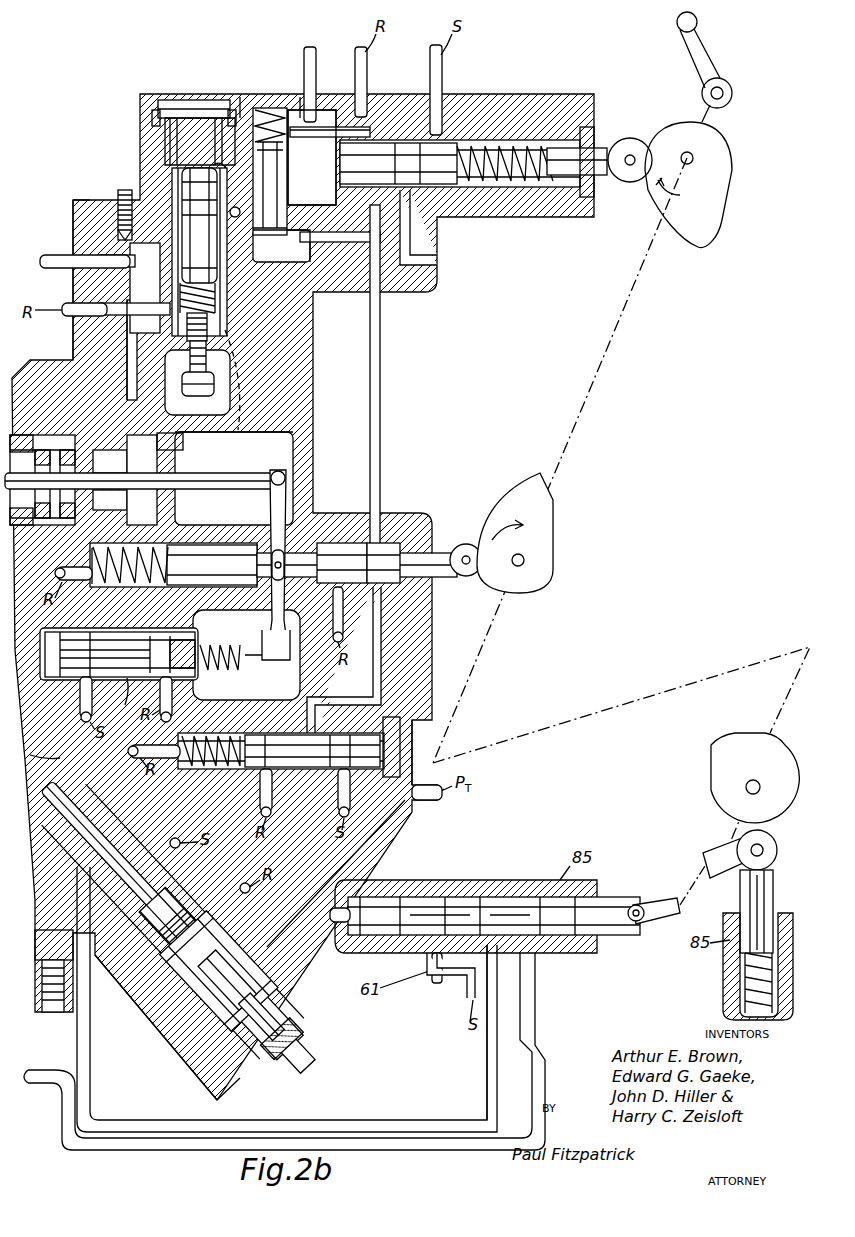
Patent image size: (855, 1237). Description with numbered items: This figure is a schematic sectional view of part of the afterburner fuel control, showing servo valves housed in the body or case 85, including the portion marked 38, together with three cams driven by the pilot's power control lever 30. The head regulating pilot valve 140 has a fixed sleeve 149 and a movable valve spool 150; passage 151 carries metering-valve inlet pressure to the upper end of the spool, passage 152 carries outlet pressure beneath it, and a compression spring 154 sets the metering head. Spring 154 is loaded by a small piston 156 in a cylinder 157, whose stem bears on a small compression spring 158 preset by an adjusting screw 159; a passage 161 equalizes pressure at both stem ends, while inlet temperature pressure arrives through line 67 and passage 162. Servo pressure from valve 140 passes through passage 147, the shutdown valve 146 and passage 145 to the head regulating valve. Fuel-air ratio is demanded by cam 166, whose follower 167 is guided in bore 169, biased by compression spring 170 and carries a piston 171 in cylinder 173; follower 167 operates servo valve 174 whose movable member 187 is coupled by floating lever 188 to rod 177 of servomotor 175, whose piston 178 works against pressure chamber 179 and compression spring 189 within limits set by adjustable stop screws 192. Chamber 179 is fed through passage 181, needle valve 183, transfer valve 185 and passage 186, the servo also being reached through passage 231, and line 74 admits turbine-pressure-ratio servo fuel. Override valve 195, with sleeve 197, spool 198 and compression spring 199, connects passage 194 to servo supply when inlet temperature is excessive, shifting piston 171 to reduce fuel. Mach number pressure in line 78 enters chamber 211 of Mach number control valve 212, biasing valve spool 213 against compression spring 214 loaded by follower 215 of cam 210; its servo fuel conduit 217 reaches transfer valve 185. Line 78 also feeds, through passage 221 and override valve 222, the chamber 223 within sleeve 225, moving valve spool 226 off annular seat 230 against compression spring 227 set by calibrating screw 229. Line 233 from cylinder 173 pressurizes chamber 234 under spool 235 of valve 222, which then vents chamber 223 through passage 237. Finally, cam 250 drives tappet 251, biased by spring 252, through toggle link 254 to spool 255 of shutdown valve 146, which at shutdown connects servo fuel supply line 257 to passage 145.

The pilot's power control lever 30 is at (707, 55).
The housing portion 38 is at (88, 198).
The line 67 is at (420, 797).
The line 74 is at (55, 256).
The line 78 is at (312, 50).
The body or case 85 is at (76, 222).
The head regulating pilot valve 140 is at (150, 1042).
The passage 145 is at (492, 1077).
The shutdown valve 146 is at (542, 872).
The passage 147 is at (77, 1025).
The fixed sleeve 149 is at (188, 900).
The movable valve spool 150 is at (140, 838).
The passage 151 is at (80, 762).
The passage 152 is at (178, 945).
The compression spring 154 is at (180, 880).
The small piston 156 is at (240, 990).
The cylinder 157 is at (265, 940).
The small compression spring 158 is at (285, 985).
The adjusting screw 159 is at (285, 1050).
The passage 161 is at (228, 1082).
The passage 162 is at (370, 850).
The cam 166 is at (537, 522).
The reciprocating follower 167 is at (445, 548).
The bore 169 is at (110, 632).
The compression spring 170 is at (135, 540).
The piston 171 is at (350, 543).
The cylinder 173 is at (408, 545).
The servo valve 174 is at (133, 692).
The servomotor 175 is at (205, 465).
The rod 177 is at (250, 450).
The piston 178 is at (85, 442).
The pressure chamber 179 is at (205, 392).
The passage 181 is at (127, 375).
The needle valve 183 is at (124, 190).
The transfer valve 185 is at (208, 118).
The passage 186 is at (245, 392).
The movable member 187 is at (197, 678).
The floating lever 188 is at (275, 540).
The compression spring 189 is at (45, 448).
The adjustable stop screws 192 is at (15, 435).
The passage 194 is at (381, 660).
The override valve 195 is at (437, 733).
The sleeve 197 is at (320, 768).
The spool 198 is at (238, 733).
The compression spring 199 is at (210, 770).
The cam 210 is at (718, 180).
The chamber 211 is at (322, 137).
The Mach number control valve 212 is at (400, 138).
The valve spool 213 is at (460, 143).
The compression spring 214 is at (512, 143).
The follower 215 is at (610, 150).
The servo fuel conduit 217 is at (420, 245).
The passage 221 is at (318, 205).
The override valve 222 is at (255, 95).
The chamber 223 is at (216, 168).
The body or sleeve 225 is at (200, 118).
The valve spool 226 is at (182, 190).
The compression spring 227 is at (212, 320).
The calibrating screw 229 is at (206, 352).
The annular seat 230 is at (234, 208).
The passage 231 is at (172, 220).
The line 233 is at (380, 378).
The chamber 234 is at (225, 300).
The spool 235 is at (272, 108).
The passage 237 is at (330, 128).
The cam 250 is at (725, 800).
The sliding follower or tappet 251 is at (770, 900).
The spring 252 is at (740, 980).
The toggle link 254 is at (668, 898).
The movable spool 255 is at (498, 897).
The servo fuel supply line 257 is at (445, 985).